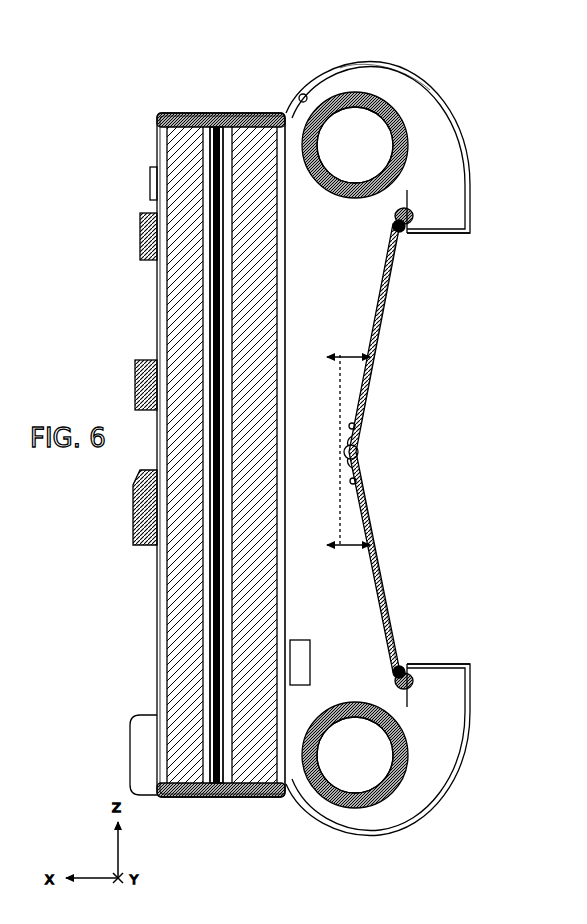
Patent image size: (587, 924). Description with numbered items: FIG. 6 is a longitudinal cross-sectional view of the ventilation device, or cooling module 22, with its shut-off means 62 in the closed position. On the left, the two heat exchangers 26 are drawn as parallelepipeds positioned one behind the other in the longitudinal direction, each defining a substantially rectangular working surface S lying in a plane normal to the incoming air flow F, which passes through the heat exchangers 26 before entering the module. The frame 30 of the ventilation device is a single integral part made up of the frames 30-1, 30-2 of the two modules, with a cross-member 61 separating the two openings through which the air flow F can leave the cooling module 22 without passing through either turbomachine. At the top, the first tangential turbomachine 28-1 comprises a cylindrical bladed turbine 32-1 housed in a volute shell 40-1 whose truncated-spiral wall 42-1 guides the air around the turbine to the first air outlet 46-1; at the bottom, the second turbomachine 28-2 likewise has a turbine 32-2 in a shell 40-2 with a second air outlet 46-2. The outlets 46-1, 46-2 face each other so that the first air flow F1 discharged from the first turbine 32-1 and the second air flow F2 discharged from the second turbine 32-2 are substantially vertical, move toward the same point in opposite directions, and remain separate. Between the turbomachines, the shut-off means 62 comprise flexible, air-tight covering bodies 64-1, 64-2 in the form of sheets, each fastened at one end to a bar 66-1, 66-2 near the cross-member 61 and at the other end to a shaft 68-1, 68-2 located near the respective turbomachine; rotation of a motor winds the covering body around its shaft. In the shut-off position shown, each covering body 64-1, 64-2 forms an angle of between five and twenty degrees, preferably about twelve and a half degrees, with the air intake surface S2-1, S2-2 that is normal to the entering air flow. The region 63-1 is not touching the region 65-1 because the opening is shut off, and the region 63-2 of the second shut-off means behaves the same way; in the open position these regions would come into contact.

The cooling module 22 is at (155, 85).
The heat exchanger 26 is at (247, 584).
The first tangential turbomachine 28-1 is at (357, 140).
The second turbomachine 28-2 is at (355, 757).
The frame 30 is at (298, 486).
The first module frame 30-1 is at (313, 213).
The second module frame 30-2 is at (300, 703).
The first turbine 32-1 is at (405, 115).
The second turbine 32-2 is at (349, 812).
The shell 40-1 is at (318, 97).
The shell 40-2 is at (380, 833).
The wall 42-1 is at (396, 78).
The first air outlet 46-1 is at (455, 239).
The second air outlet 46-2 is at (455, 660).
The cross-member 61 is at (356, 451).
The shut-off means 62 is at (399, 344).
The region 63-1 is at (388, 229).
The region 63-2 is at (361, 481).
The covering body 64-1 is at (370, 377).
The covering body 64-2 is at (365, 530).
The region 65-1 is at (358, 424).
The bar 66-1 is at (358, 438).
The bar 66-2 is at (355, 465).
The shaft 68-1 is at (410, 213).
The shaft 68-2 is at (410, 679).
The working surface S is at (288, 300).
The first air intake surface S2-1 is at (272, 328).
The second air intake surface S2-2 is at (272, 622).
The air flow F is at (88, 276).
The first air flow F1 is at (425, 265).
The second air flow F2 is at (425, 607).